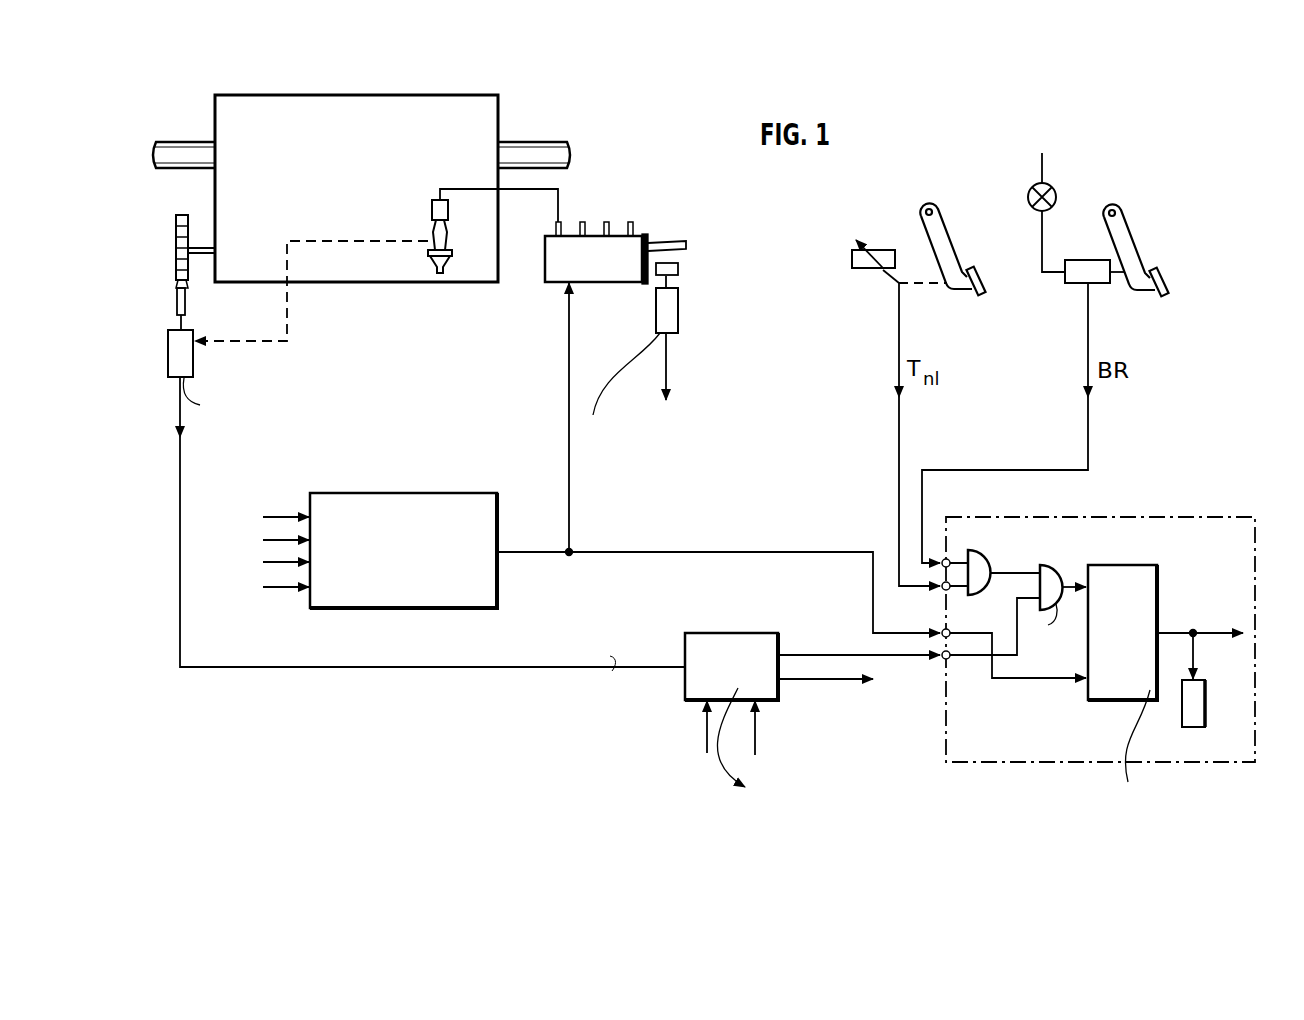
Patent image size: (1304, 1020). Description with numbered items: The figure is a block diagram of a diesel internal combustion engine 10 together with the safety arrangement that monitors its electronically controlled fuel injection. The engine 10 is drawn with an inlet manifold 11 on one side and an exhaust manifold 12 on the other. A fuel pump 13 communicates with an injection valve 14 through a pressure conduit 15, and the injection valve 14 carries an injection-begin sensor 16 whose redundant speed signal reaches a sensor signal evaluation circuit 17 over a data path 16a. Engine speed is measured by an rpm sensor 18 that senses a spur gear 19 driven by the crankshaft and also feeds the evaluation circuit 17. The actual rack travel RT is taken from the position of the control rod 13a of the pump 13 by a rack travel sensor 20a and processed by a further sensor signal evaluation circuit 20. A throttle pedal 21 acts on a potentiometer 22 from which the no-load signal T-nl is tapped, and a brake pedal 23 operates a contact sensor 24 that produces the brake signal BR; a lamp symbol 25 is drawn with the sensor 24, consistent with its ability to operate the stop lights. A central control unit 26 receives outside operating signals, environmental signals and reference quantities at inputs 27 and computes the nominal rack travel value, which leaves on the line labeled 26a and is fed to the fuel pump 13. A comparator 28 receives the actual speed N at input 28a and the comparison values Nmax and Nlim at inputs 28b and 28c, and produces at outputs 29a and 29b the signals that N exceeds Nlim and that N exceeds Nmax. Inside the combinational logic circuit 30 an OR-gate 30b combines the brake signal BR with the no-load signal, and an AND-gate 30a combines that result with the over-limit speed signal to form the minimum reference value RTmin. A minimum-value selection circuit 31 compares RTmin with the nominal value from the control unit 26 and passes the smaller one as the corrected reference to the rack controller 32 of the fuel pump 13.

The internal combustion engine 10 is at (356, 188).
The inlet manifold 11 is at (190, 150).
The exhaust manifold 12 is at (541, 152).
The fuel pump 13 is at (614, 240).
The control rod 13a is at (676, 241).
The injection valve 14 is at (430, 240).
The pressure conduit 15 is at (465, 189).
The injection-begin sensor 16 is at (441, 243).
The data path 16a is at (288, 308).
The sensor signal evaluation circuit 17 is at (183, 353).
The rpm sensor 18 is at (186, 300).
The spur gear 19 is at (181, 218).
The sensor signal evaluation circuit 20 is at (668, 318).
The rack travel sensor 20a is at (679, 268).
The throttle pedal 21 is at (944, 242).
The potentiometer 22 is at (878, 260).
The brake pedal 23 is at (1128, 242).
The contact sensor 24 is at (1080, 272).
The brake lamp 25 is at (1050, 194).
The central control unit 26 is at (391, 512).
The central control unit output 26a is at (498, 556).
The inputs 27 is at (263, 587).
The comparator 28 is at (727, 655).
The input 28a is at (685, 664).
The input 28b is at (706, 705).
The input 28c is at (758, 704).
The output 29a is at (785, 655).
The output 29b is at (782, 682).
The combinational logic circuit 30 is at (1172, 535).
The AND-gate 30a is at (1046, 580).
The OR-gate 30b is at (980, 573).
The minimum-value selection circuit 31 is at (1123, 586).
The rack controller 32 is at (1196, 710).